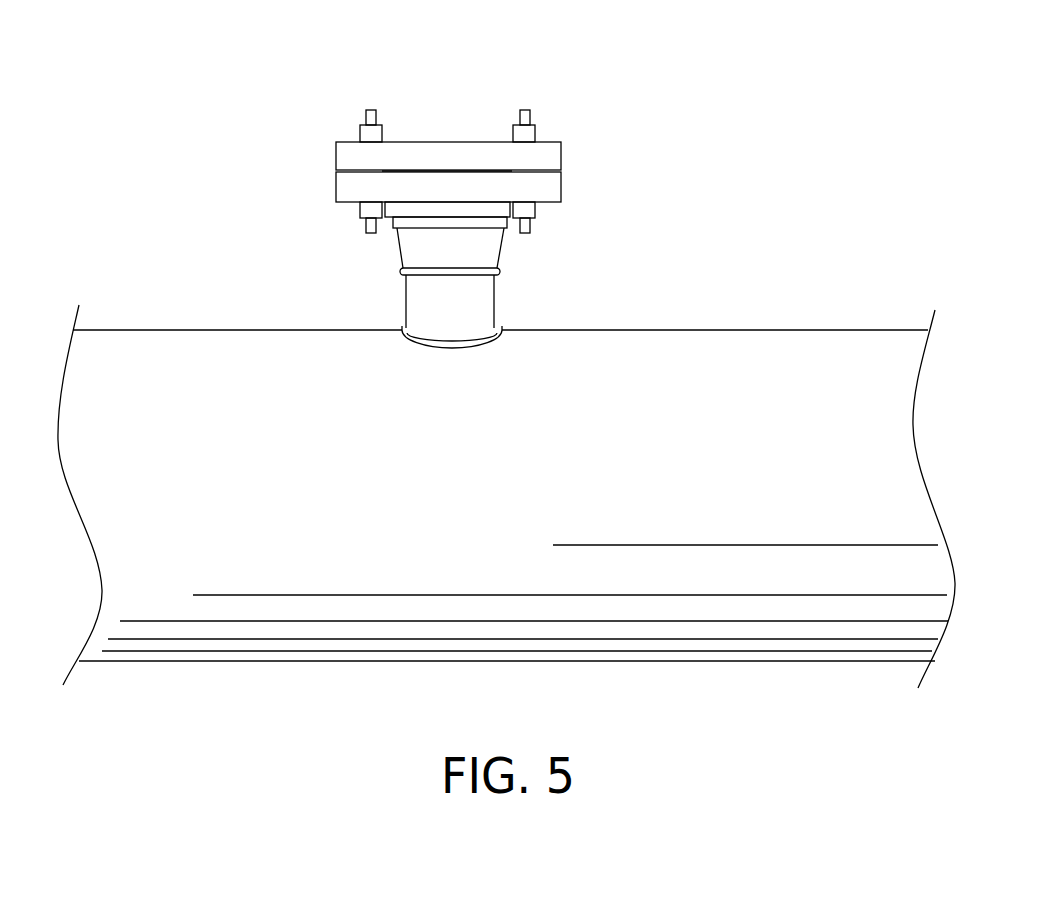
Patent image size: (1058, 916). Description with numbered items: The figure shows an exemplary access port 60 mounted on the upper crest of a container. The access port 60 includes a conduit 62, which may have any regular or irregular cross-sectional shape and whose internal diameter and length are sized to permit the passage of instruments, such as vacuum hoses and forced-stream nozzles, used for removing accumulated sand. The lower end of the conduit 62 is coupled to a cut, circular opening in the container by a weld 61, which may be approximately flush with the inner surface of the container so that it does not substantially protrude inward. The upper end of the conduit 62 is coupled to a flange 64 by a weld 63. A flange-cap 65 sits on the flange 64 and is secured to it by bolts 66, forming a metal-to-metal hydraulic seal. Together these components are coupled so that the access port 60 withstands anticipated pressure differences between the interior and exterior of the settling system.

The access port 60 is at (556, 134).
The weld 61 is at (405, 342).
The conduit 62 is at (494, 310).
The weld 63 is at (402, 270).
The flange 64 is at (500, 248).
The flange-cap 65 is at (562, 158).
The bolts 66 is at (371, 108).